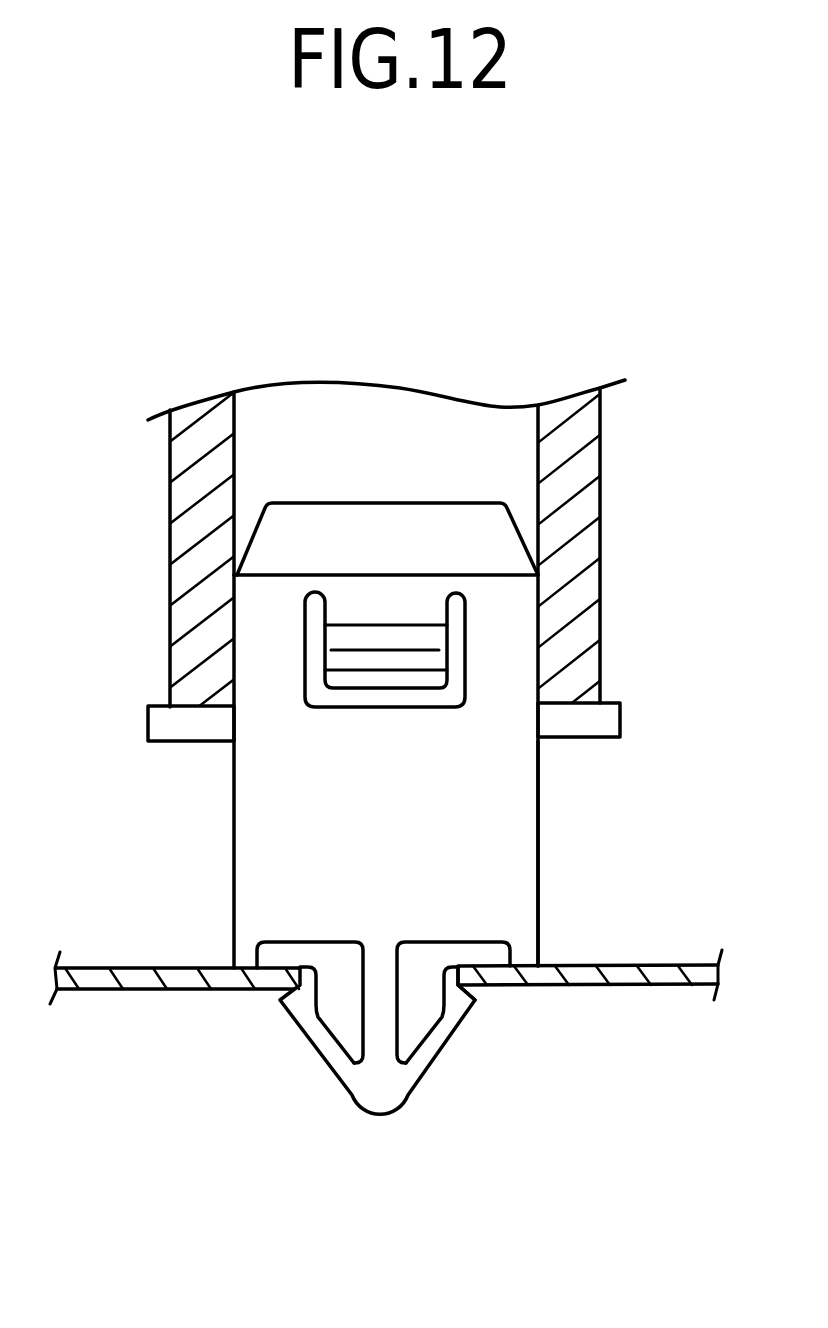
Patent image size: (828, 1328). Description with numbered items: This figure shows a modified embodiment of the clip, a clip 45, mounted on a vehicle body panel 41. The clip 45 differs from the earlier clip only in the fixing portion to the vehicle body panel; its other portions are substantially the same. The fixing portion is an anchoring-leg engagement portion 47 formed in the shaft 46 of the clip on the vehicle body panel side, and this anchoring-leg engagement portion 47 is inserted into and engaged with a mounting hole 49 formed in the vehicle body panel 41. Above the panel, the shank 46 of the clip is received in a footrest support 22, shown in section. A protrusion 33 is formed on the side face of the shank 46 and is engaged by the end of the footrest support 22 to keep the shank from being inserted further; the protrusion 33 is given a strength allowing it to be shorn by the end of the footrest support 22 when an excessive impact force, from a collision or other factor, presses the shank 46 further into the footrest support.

The footrest support 22 is at (183, 499).
The protrusion 33 is at (158, 720).
The vehicle body panel 41 is at (112, 980).
The clip 45 is at (542, 800).
The shank 46 is at (520, 882).
The anchoring-leg engagement portion 47 is at (313, 1048).
The mounting hole 49 is at (413, 975).